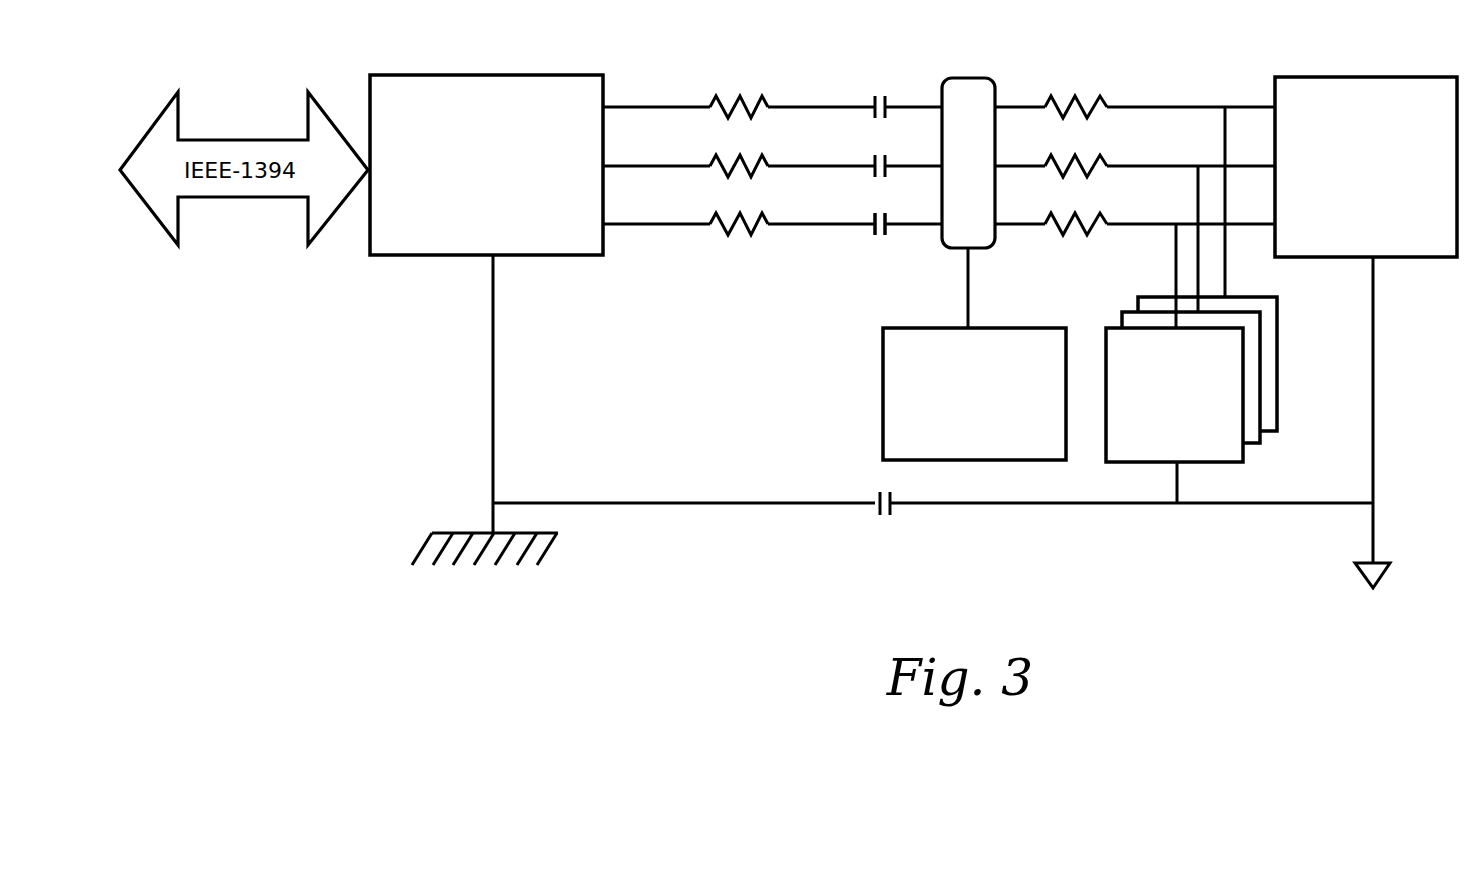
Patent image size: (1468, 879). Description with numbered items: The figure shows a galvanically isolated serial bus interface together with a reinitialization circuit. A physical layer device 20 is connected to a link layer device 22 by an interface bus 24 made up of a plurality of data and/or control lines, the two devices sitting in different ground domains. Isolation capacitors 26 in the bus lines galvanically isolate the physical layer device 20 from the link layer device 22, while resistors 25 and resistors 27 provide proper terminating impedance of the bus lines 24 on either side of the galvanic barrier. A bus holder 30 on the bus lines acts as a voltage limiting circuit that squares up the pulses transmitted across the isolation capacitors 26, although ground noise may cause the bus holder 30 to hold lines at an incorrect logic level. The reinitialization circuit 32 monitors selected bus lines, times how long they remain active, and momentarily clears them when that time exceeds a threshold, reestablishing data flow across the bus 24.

The physical layer device 20 is at (470, 227).
The link layer device 22 is at (1349, 232).
The interface bus 24 is at (862, 73).
The resistors 25 is at (715, 247).
The isolation capacitors 26 is at (863, 247).
The resistors 27 is at (1049, 80).
The bus holder 30 is at (1158, 445).
The reinitialization circuit 32 is at (958, 445).